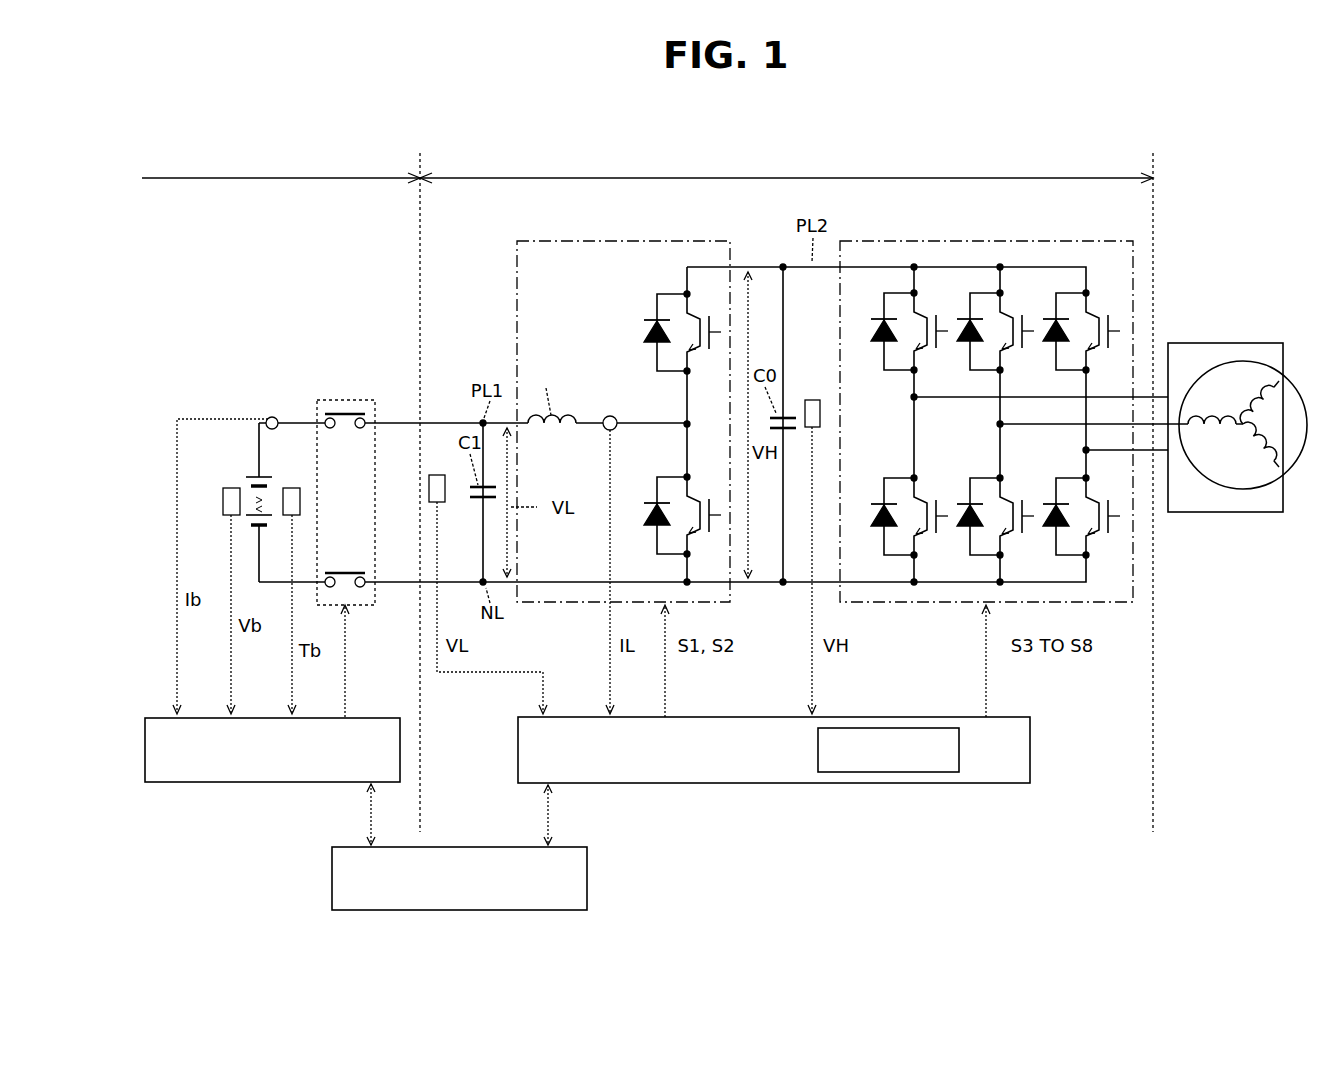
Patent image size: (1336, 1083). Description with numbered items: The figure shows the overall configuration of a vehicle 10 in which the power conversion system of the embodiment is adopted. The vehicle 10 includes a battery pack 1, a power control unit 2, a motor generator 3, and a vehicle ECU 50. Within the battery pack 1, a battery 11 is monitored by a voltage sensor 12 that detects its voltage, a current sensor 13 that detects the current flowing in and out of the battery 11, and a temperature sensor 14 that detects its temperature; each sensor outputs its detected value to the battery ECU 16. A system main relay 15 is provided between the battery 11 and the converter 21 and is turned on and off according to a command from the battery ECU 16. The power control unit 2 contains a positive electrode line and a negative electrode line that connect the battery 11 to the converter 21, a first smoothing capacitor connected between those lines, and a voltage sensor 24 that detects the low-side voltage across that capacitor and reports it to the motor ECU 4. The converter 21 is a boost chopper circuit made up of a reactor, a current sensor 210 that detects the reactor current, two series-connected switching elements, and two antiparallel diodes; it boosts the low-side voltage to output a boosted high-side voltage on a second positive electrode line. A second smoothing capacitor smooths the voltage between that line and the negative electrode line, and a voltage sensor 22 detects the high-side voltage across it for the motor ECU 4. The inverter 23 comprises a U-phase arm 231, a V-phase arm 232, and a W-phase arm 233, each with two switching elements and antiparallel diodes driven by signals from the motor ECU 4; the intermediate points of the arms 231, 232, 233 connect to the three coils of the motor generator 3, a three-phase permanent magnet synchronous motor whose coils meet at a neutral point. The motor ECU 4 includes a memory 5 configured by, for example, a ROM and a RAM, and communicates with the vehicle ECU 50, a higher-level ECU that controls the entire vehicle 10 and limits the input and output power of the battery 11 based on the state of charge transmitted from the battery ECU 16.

The battery pack 1 is at (281, 165).
The power control unit 2 is at (786, 165).
The vehicle 10 is at (1247, 170).
The motor generator 3 is at (1300, 394).
The battery 11 is at (253, 474).
The voltage sensor 12 is at (229, 488).
The current sensor 13 is at (274, 417).
The temperature sensor 14 is at (294, 488).
The system main relay 15 is at (354, 400).
The battery ECU 16 is at (362, 718).
The converter 21 is at (710, 241).
The voltage sensor 22 is at (812, 400).
The inverter 23 is at (1075, 241).
The voltage sensor 24 is at (437, 475).
The current sensor 210 is at (611, 415).
The U-phase arm 231 is at (870, 409).
The V-phase arm 232 is at (961, 434).
The W-phase arm 233 is at (1048, 460).
The motor ECU 4 is at (860, 717).
The memory 5 is at (960, 747).
The vehicle ECU 50 is at (574, 847).